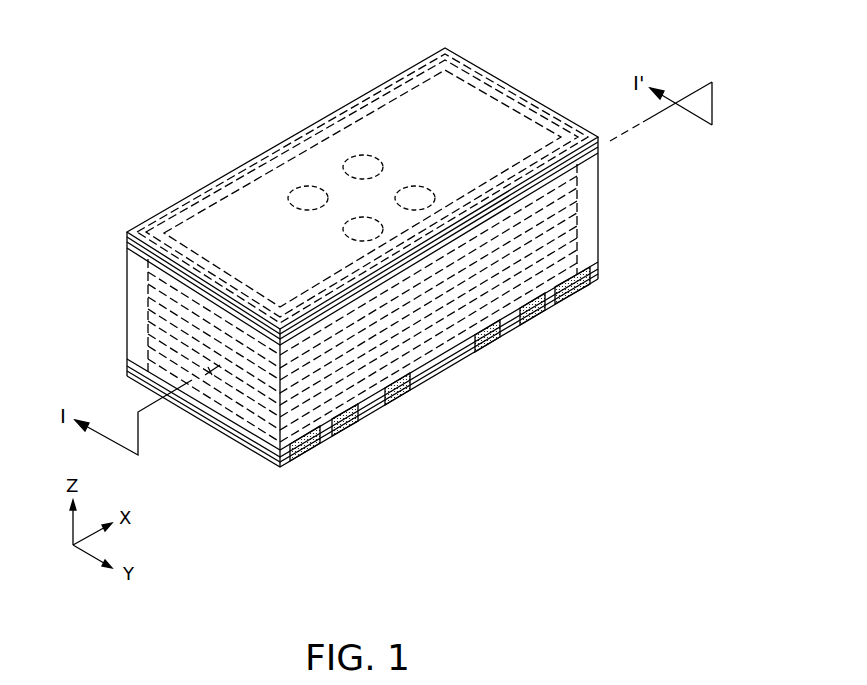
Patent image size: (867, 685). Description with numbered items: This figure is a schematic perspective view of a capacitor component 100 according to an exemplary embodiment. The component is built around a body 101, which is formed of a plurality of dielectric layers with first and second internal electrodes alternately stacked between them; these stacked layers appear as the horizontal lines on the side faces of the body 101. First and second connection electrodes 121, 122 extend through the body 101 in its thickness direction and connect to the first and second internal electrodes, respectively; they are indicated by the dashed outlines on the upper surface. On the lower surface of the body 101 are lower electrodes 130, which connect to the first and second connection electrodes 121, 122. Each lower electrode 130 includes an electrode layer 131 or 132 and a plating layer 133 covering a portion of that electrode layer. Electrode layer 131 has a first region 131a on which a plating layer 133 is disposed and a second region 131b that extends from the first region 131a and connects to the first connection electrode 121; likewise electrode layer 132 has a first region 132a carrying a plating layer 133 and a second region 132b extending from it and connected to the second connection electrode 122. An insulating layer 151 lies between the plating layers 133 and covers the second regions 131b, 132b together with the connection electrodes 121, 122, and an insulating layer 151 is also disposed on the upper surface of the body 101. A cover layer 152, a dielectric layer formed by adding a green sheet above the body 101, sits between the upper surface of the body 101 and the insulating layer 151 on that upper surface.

The capacitor component 100 is at (251, 28).
The body 101 is at (133, 309).
The first connection electrode 121 is at (300, 187).
The second connection electrode 122 is at (353, 155).
The lower electrodes 130 is at (446, 507).
The electrode layer 131 is at (446, 455).
The first region 131a is at (347, 420).
The second region 131b is at (397, 400).
The electrode layer 132 is at (580, 375).
The first region 132a is at (528, 312).
The second region 132b is at (487, 347).
The plating layers 133 is at (313, 450).
The insulating layer 151 is at (558, 110).
The cover layer 152 is at (588, 155).